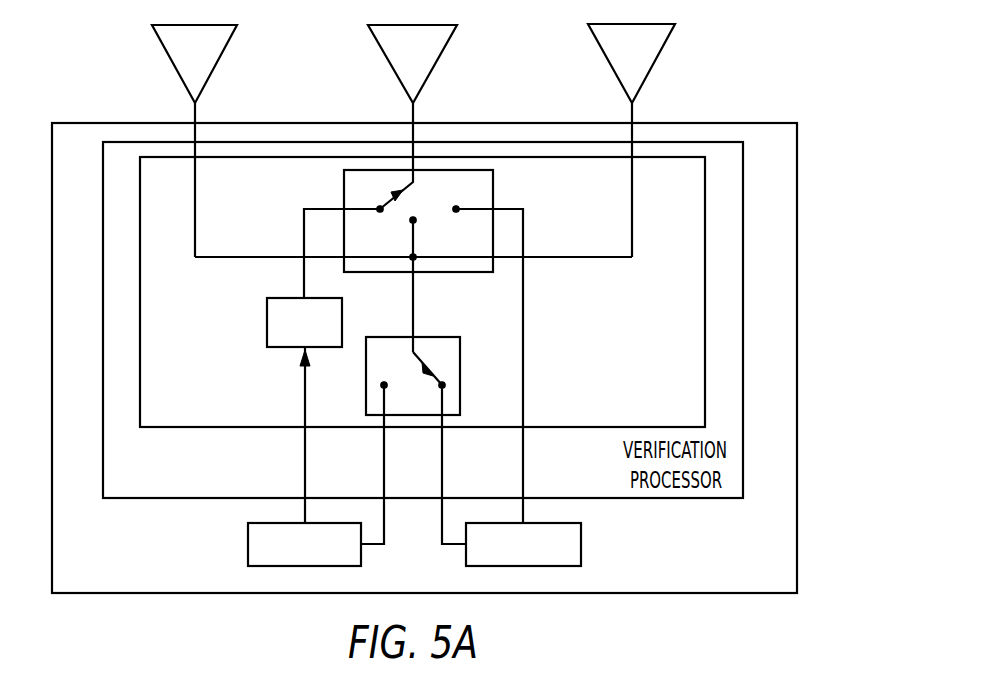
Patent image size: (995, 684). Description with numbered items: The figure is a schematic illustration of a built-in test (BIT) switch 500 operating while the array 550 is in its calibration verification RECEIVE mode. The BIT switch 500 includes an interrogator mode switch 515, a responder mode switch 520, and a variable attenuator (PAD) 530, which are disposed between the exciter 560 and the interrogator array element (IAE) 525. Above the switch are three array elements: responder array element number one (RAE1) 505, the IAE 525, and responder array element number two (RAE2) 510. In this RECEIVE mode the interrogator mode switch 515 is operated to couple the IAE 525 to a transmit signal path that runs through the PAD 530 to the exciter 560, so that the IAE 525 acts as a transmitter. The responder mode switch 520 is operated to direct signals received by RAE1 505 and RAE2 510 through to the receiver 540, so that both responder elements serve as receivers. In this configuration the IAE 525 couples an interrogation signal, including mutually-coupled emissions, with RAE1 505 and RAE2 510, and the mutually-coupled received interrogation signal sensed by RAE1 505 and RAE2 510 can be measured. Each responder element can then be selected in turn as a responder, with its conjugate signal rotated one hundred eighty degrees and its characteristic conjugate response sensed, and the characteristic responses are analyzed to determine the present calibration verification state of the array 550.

The built-in test (BIT) switch 500 is at (203, 428).
The responder array element #1 (RAE1) 505 is at (224, 46).
The responder array element #2 (RAE2) 510 is at (662, 46).
The interrogator mode switch 515 is at (493, 186).
The responder mode switch 520 is at (448, 336).
The interrogator array element (IAE) 525 is at (445, 46).
The variable attenuator (PAD) 530 is at (267, 334).
The receiver 540 is at (581, 548).
The array 550 is at (797, 500).
The exciter 560 is at (248, 548).